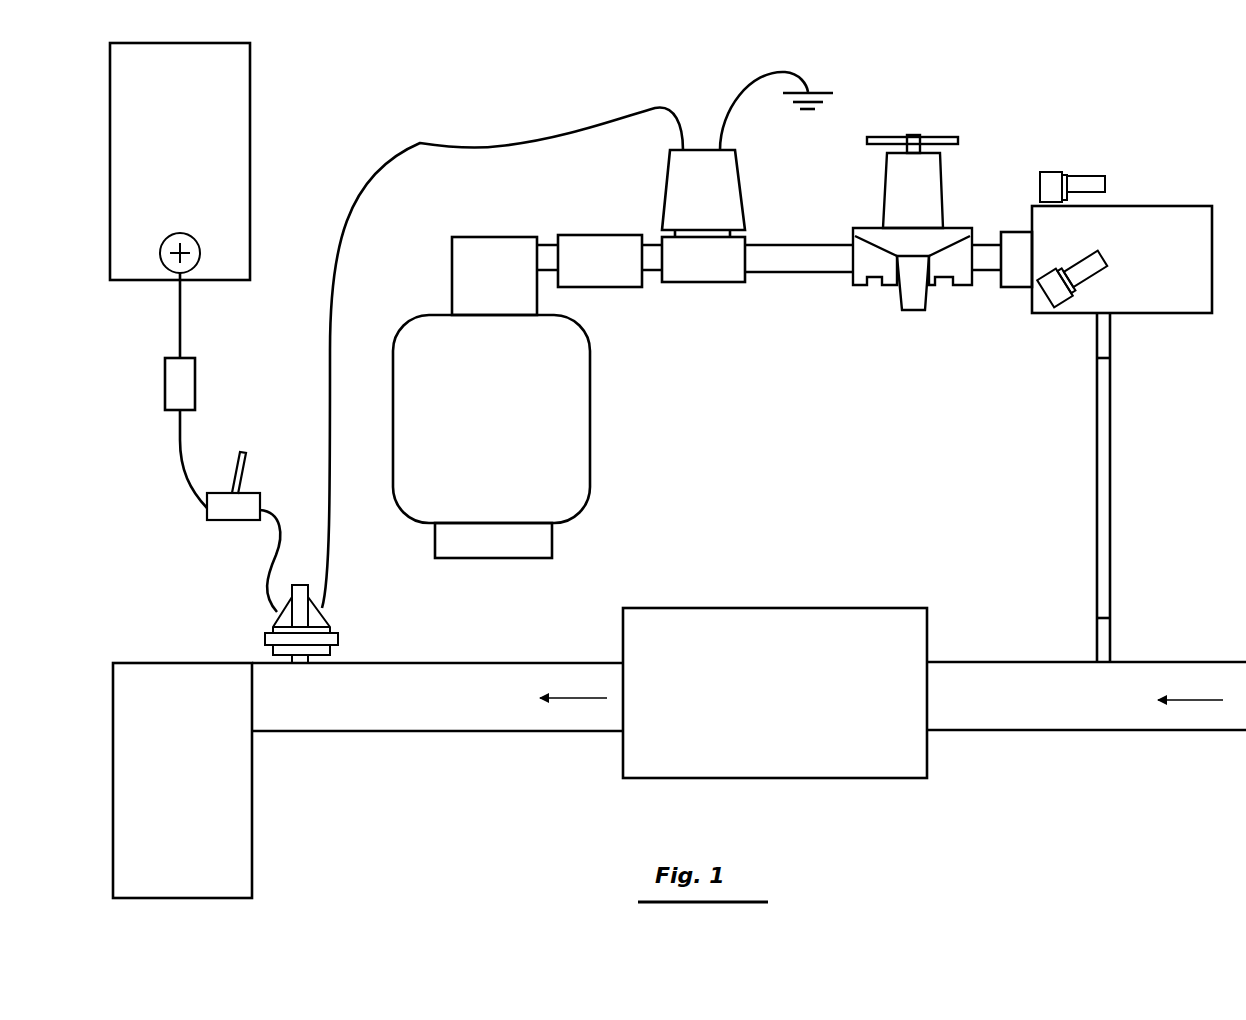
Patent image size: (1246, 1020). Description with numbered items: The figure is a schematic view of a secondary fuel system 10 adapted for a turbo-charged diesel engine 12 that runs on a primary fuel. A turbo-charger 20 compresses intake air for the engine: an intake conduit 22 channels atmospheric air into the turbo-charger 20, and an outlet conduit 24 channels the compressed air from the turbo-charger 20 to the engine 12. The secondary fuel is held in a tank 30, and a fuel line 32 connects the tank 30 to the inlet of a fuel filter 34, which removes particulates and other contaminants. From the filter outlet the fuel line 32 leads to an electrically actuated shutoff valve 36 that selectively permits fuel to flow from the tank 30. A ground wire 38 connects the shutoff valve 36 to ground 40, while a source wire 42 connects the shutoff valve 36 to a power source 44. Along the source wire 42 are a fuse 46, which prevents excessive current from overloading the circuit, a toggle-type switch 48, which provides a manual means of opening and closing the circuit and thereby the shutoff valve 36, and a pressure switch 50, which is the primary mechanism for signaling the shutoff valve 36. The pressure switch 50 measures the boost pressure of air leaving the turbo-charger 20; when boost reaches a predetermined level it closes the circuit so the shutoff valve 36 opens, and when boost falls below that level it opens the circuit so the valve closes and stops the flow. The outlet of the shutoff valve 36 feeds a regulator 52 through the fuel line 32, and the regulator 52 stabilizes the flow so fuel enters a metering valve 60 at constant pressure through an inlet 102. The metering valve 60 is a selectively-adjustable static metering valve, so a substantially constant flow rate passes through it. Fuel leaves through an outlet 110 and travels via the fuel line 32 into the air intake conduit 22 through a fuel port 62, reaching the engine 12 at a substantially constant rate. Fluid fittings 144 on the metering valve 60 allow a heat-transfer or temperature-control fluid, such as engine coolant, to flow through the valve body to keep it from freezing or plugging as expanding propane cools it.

The secondary fuel system 10 is at (1047, 78).
The diesel engine 12 is at (197, 796).
The turbo-charger 20 is at (787, 704).
The intake conduit 22 is at (1027, 709).
The outlet conduit 24 is at (469, 706).
The tank 30 is at (502, 434).
The fuel line 32 is at (553, 250).
The fuel filter 34 is at (585, 235).
The shutoff valve 36 is at (727, 197).
The ground wire 38 is at (752, 80).
The ground 40 is at (822, 90).
The source wire 42 is at (364, 180).
The power source 44 is at (194, 147).
The fuse 46 is at (196, 387).
The switch 48 is at (232, 522).
The pressure switch 50 is at (328, 612).
The regulator 52 is at (915, 312).
The metering valve 60 is at (1170, 200).
The fuel port 62 is at (1112, 660).
The inlet 102 is at (1013, 230).
The outlet 110 is at (1112, 325).
The fluid fitting 144 is at (1050, 175).